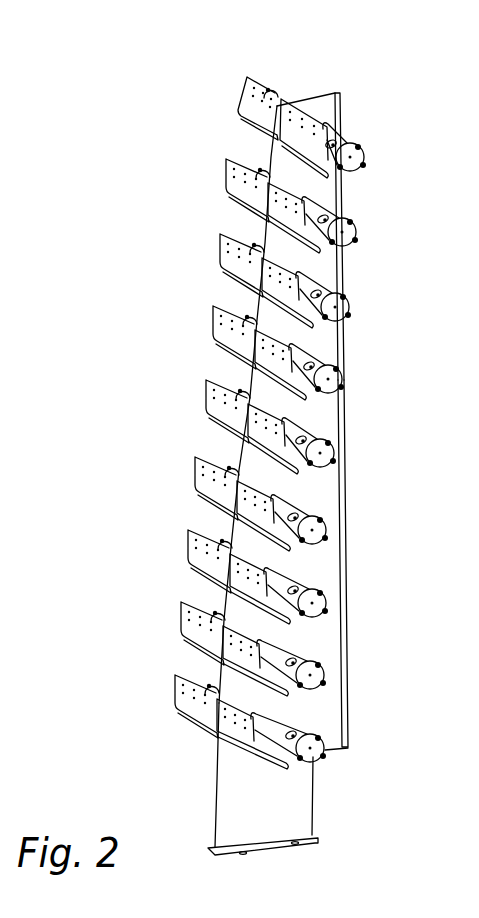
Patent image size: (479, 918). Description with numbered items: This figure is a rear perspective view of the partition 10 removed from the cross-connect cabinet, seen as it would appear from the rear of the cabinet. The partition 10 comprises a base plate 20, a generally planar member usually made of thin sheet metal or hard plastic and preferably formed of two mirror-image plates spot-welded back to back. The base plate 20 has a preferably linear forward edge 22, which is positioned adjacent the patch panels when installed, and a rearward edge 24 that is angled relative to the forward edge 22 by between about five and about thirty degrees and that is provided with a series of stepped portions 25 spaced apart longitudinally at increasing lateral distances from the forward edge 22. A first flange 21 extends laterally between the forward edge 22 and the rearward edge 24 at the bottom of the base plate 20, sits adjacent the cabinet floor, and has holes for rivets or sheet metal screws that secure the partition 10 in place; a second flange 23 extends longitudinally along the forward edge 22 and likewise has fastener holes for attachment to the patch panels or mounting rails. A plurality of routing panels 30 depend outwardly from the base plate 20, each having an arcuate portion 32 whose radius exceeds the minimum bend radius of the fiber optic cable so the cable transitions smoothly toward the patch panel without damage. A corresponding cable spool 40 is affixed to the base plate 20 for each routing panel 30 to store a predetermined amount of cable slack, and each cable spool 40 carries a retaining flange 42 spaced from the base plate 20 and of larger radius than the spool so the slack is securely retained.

The partition 10 is at (393, 134).
The base plate 20 is at (328, 558).
The first flange 21 is at (305, 858).
The forward edge 22 is at (348, 418).
The second flange 23 is at (345, 265).
The rearward edge 24 is at (216, 780).
The stepped portions 25 is at (262, 248).
The routing panels 30 is at (215, 331).
The arcuate portion 32 is at (212, 428).
The cable spools 40 is at (295, 650).
The retaining flange 42 is at (322, 686).